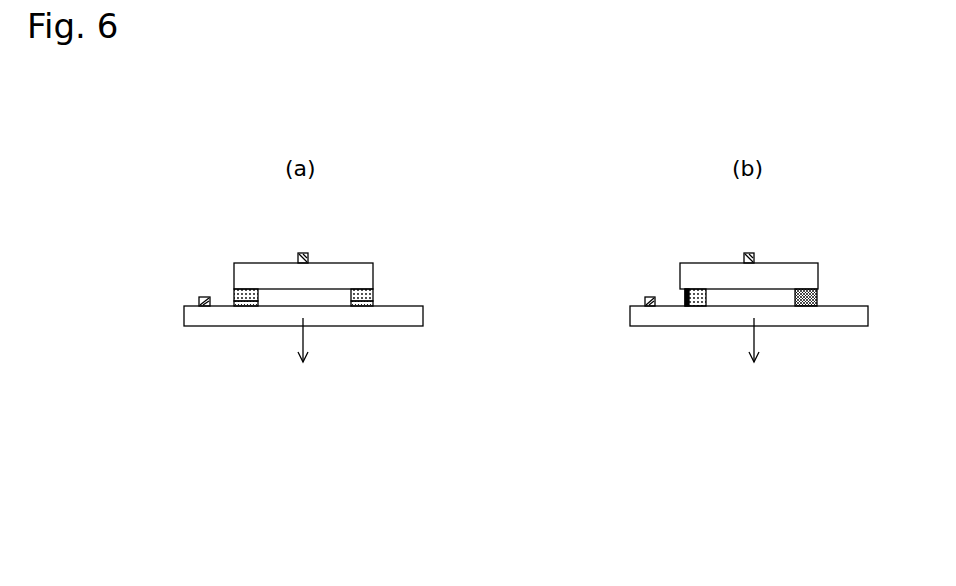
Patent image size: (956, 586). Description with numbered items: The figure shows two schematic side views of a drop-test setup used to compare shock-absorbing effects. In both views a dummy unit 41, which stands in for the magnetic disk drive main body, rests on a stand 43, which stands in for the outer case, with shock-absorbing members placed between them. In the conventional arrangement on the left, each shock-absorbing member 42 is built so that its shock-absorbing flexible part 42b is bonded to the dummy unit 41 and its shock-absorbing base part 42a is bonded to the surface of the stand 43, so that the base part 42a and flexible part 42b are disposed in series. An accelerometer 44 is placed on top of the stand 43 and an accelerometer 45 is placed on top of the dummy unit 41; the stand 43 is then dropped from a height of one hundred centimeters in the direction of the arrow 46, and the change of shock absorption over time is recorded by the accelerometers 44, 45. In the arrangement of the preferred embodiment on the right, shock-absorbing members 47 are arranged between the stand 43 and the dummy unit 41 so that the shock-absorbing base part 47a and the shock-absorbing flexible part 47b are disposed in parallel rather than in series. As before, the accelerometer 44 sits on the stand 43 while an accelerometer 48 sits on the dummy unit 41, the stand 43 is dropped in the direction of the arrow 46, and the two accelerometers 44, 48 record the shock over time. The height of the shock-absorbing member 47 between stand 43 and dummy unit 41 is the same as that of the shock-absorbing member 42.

The dummy unit 41 is at (268, 272).
The shock-absorbing member 42 is at (317, 371).
The shock-absorbing base part 42a is at (247, 307).
The shock-absorbing flexible part 42b is at (239, 307).
The stand 43 is at (402, 315).
The accelerometer 44 is at (203, 297).
The accelerometer 45 is at (305, 253).
The arrow 46 is at (305, 339).
The shock-absorbing member 47 is at (762, 371).
The shock-absorbing base part 47a is at (685, 307).
The shock-absorbing flexible part 47b is at (697, 307).
The accelerometer 48 is at (750, 253).